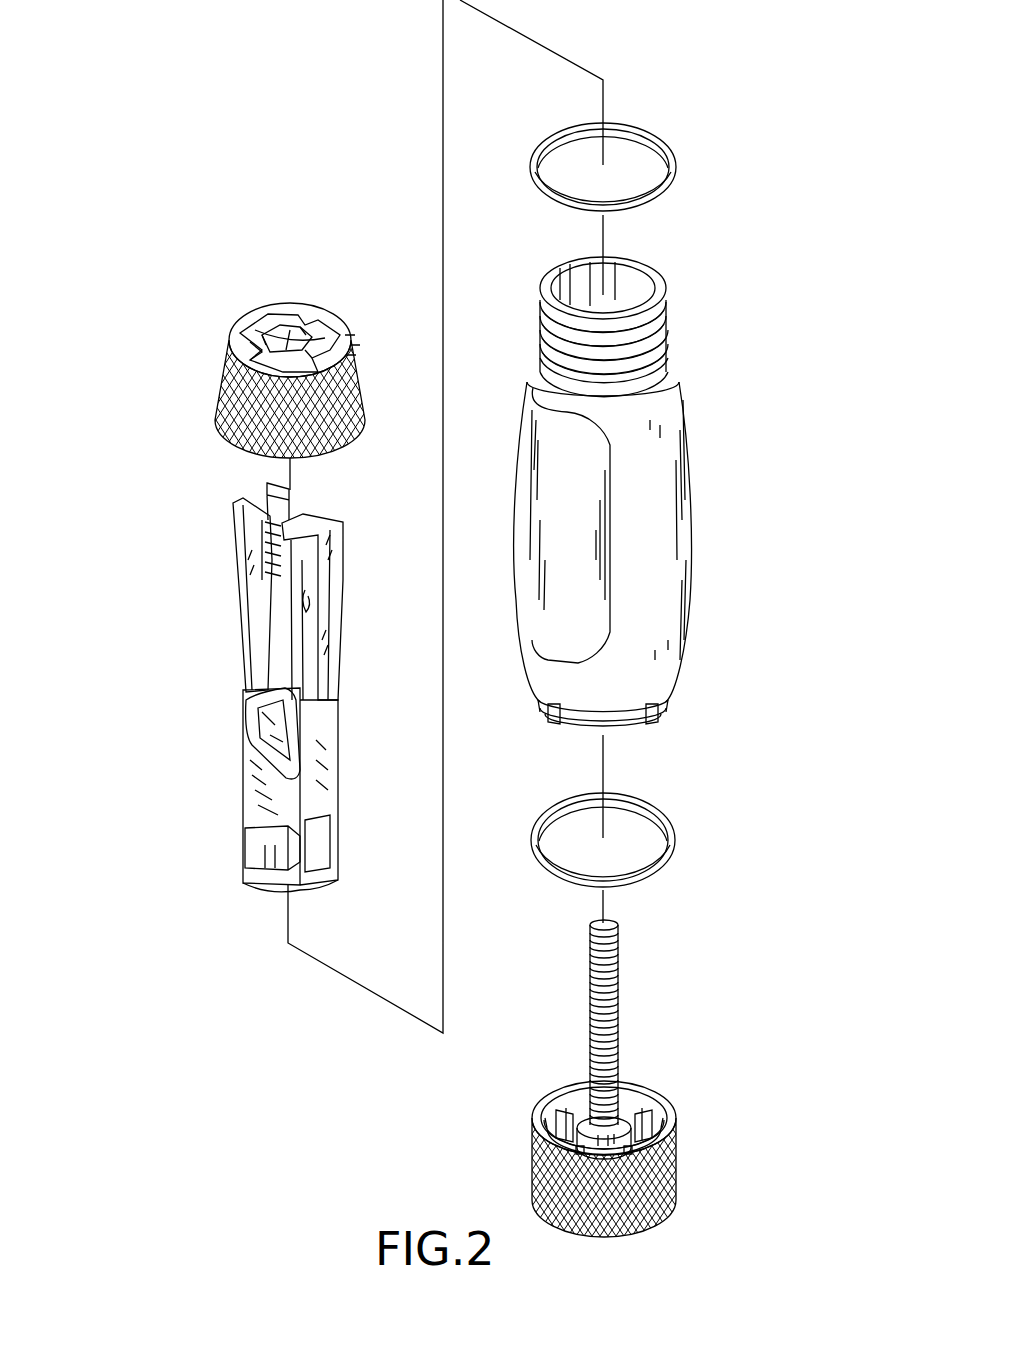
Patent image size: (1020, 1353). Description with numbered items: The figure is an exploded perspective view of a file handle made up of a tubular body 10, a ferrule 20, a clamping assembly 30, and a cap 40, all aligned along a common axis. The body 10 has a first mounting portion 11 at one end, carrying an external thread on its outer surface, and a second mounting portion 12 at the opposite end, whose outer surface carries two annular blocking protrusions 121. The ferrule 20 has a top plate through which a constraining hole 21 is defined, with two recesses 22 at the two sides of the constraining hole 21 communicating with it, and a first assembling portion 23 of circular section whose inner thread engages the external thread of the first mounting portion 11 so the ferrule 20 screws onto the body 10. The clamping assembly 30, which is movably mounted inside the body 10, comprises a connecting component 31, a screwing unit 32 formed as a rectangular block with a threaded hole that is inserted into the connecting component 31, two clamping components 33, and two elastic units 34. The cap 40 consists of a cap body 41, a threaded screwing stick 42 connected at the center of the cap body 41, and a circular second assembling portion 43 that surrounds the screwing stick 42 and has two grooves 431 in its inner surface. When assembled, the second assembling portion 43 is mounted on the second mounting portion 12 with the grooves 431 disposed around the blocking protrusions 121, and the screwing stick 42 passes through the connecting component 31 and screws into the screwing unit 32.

The body 10 is at (653, 519).
The first mounting portion 11 is at (662, 334).
The second mounting portion 12 is at (632, 741).
The blocking protrusion 121 is at (570, 724).
The ferrule 20 is at (258, 364).
The constraining hole 21 is at (277, 333).
The recesses 22 is at (312, 330).
The first assembling portion 23 is at (233, 430).
The clamping assembly 30 is at (220, 690).
The connecting component 31 is at (240, 795).
The screwing unit 32 is at (262, 858).
The clamping components 33 is at (235, 565).
The elastic units 34 is at (250, 706).
The cap 40 is at (630, 1088).
The cap body 41 is at (660, 1215).
The screwing stick 42 is at (612, 975).
The second assembling portion 43 is at (623, 1098).
The groove 431 is at (565, 1102).